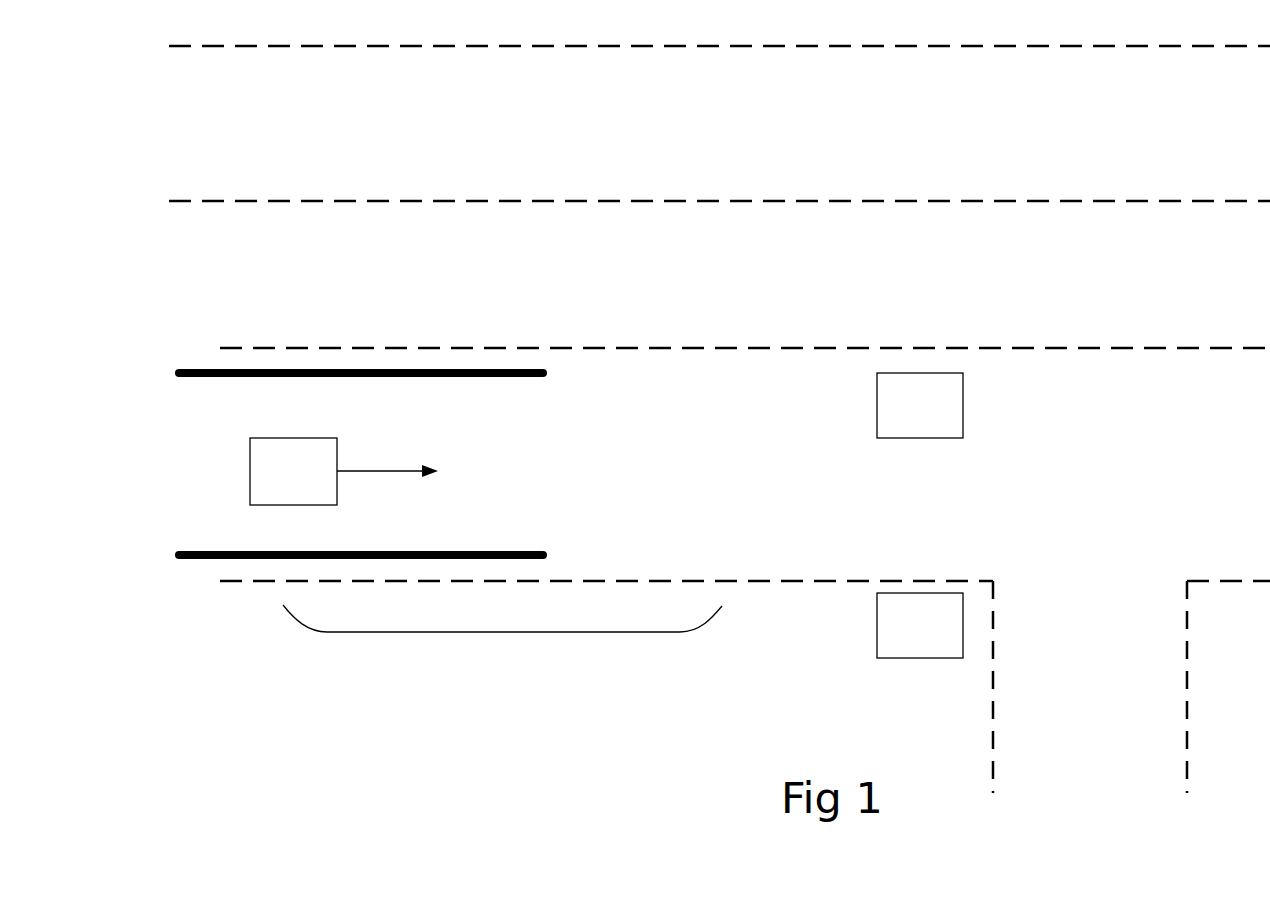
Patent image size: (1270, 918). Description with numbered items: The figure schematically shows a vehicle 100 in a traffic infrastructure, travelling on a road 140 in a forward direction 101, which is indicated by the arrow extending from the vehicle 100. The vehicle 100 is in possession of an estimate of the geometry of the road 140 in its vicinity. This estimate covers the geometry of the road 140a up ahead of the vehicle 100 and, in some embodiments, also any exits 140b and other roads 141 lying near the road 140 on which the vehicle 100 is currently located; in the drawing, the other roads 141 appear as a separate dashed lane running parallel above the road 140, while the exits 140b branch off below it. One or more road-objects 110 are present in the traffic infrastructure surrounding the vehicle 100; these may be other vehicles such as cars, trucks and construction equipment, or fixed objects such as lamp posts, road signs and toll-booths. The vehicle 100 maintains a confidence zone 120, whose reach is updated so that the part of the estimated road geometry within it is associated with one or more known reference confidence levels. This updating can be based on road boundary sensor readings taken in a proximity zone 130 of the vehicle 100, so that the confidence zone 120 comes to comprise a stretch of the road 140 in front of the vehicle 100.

The vehicle 100 is at (293, 471).
The forward direction 101 is at (363, 443).
The road-objects 110 is at (920, 515).
The confidence zone 120 is at (515, 362).
The proximity zone 130 is at (503, 632).
The road 140 is at (723, 340).
The road up ahead 140a is at (1228, 521).
The exits 140b is at (1090, 687).
The other roads 141 is at (719, 123).